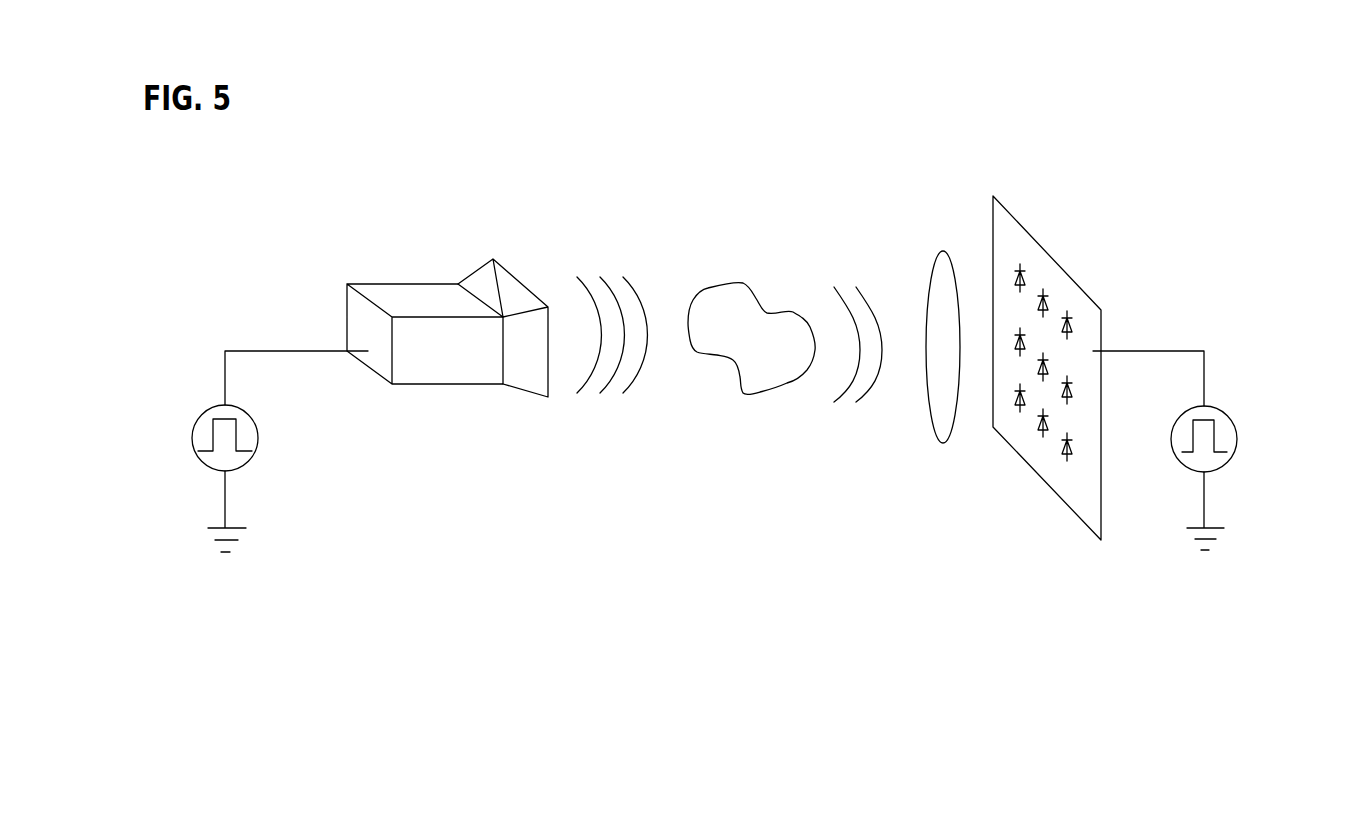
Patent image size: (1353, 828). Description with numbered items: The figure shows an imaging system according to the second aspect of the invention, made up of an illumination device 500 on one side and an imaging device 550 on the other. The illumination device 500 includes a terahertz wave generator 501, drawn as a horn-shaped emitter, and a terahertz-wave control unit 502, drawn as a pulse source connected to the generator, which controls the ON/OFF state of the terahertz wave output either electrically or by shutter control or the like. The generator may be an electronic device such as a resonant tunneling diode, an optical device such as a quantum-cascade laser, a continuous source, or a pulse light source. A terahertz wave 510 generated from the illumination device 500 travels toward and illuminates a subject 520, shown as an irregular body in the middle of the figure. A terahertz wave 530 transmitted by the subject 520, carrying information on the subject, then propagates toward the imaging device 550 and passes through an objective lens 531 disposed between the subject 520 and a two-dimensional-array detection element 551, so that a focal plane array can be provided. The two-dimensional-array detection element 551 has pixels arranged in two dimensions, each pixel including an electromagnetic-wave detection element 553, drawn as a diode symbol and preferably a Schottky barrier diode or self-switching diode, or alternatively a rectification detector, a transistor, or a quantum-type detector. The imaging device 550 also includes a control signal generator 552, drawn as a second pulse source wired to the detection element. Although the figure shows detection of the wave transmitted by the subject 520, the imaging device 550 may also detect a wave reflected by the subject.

The illumination device 500 is at (567, 585).
The terahertz wave generator 501 is at (395, 305).
The terahertz-wave control unit 502 is at (208, 407).
The terahertz wave 510 is at (612, 308).
The subject 520 is at (720, 312).
The terahertz wave 530 is at (852, 314).
The objective lens 531 is at (937, 280).
The imaging device 550 is at (907, 582).
The two-dimensional-array detection element 551 is at (1013, 230).
The control signal generator 552 is at (1210, 413).
The electromagnetic-wave detection element 553 is at (1075, 310).